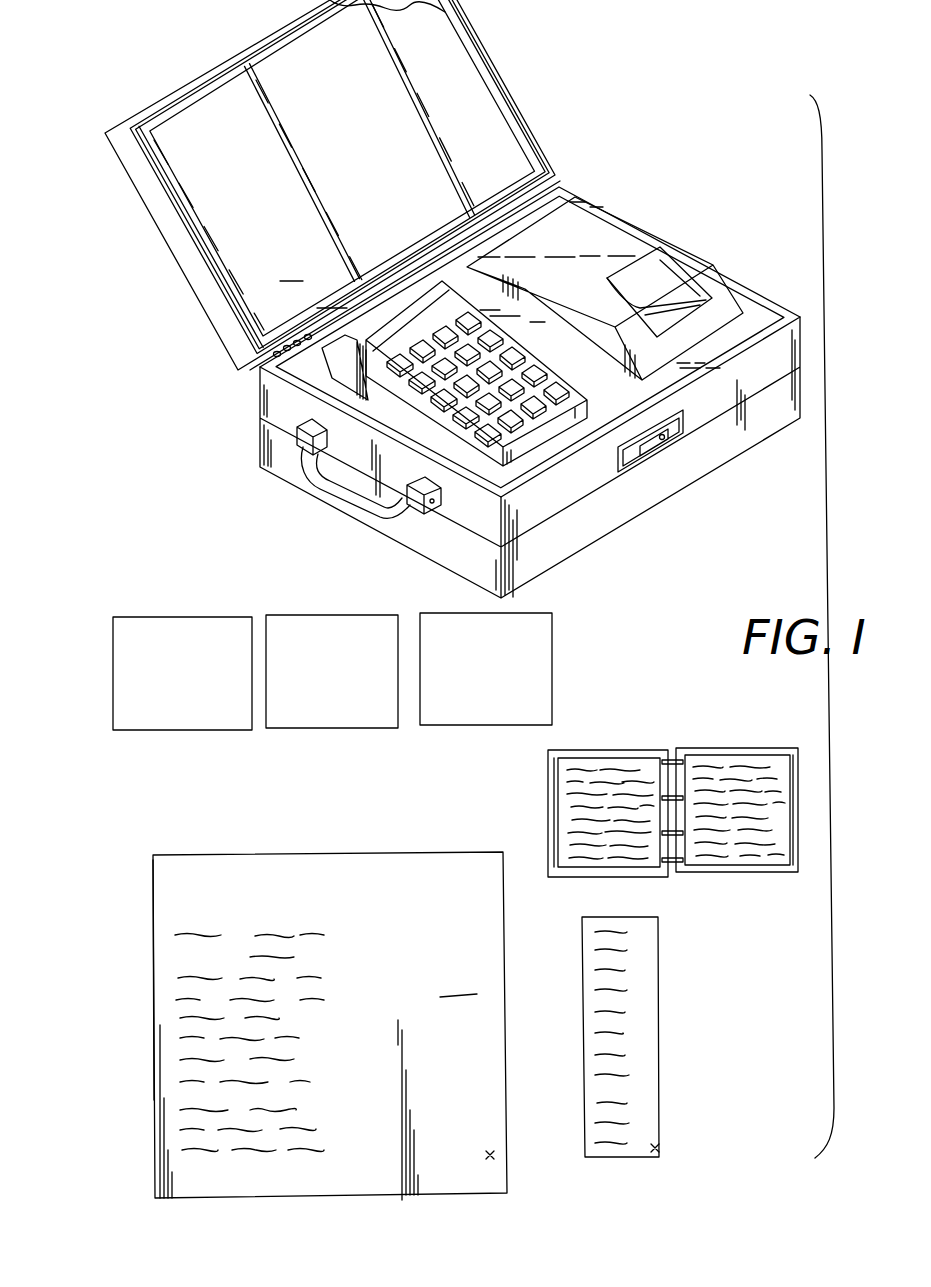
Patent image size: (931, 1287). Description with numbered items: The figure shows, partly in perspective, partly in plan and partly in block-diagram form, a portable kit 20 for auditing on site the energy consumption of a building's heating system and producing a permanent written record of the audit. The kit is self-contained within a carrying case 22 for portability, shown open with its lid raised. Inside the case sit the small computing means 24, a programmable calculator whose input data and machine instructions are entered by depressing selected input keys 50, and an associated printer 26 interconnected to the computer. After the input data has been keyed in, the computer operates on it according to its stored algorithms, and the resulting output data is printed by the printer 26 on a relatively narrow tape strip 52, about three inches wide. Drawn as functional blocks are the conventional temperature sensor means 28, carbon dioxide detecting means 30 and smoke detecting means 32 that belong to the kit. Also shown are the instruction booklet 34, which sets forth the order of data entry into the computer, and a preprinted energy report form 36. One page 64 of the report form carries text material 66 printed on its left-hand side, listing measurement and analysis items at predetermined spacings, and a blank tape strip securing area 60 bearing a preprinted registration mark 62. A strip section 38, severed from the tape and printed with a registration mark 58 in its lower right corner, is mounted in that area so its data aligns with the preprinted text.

The portable kit 20 is at (624, 166).
The carrying case 22 is at (626, 499).
The computing means 24 is at (576, 418).
The printer 26 is at (726, 290).
The temperature sensor means 28 is at (205, 611).
The carbon dioxide detecting means 30 is at (362, 610).
The smoke detecting means 32 is at (457, 610).
The instruction booklet 34 is at (606, 753).
The energy report form 36 is at (322, 851).
The strip section 38 is at (657, 939).
The input keys 50 is at (560, 383).
The tape strip 52 is at (671, 261).
The registration mark 58 is at (658, 1148).
The tape strip securing area 60 is at (458, 981).
The registration mark 62 is at (493, 1155).
The page 64 is at (152, 905).
The text material 66 is at (288, 967).